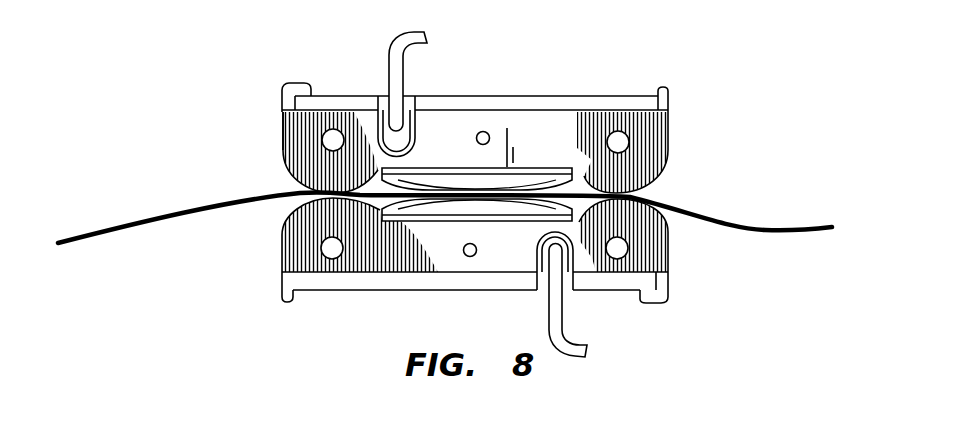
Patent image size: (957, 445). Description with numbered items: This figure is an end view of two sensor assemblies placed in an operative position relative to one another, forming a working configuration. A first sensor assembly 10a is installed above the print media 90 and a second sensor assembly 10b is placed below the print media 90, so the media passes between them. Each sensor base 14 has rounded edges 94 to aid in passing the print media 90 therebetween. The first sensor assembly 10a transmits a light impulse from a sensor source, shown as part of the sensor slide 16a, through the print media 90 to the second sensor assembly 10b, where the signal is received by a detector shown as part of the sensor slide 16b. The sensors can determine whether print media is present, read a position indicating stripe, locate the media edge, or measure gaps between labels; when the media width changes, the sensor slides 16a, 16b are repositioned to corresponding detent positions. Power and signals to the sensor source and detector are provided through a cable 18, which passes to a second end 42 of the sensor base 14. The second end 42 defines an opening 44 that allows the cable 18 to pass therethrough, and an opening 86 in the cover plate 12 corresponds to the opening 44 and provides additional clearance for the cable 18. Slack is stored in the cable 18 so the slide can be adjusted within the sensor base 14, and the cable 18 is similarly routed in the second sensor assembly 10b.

The first sensor assembly 10a is at (699, 68).
The second sensor assembly 10b is at (690, 316).
The cover plate 12 is at (483, 93).
The sensor base 14 is at (672, 122).
The sensor slide 16a is at (510, 177).
The sensor slide 16b is at (442, 208).
The cable 18 is at (390, 66).
The second end 42 is at (300, 165).
The opening 44 is at (404, 146).
The opening 86 is at (410, 100).
The print media 90 is at (750, 228).
The rounded edges 94 is at (284, 130).